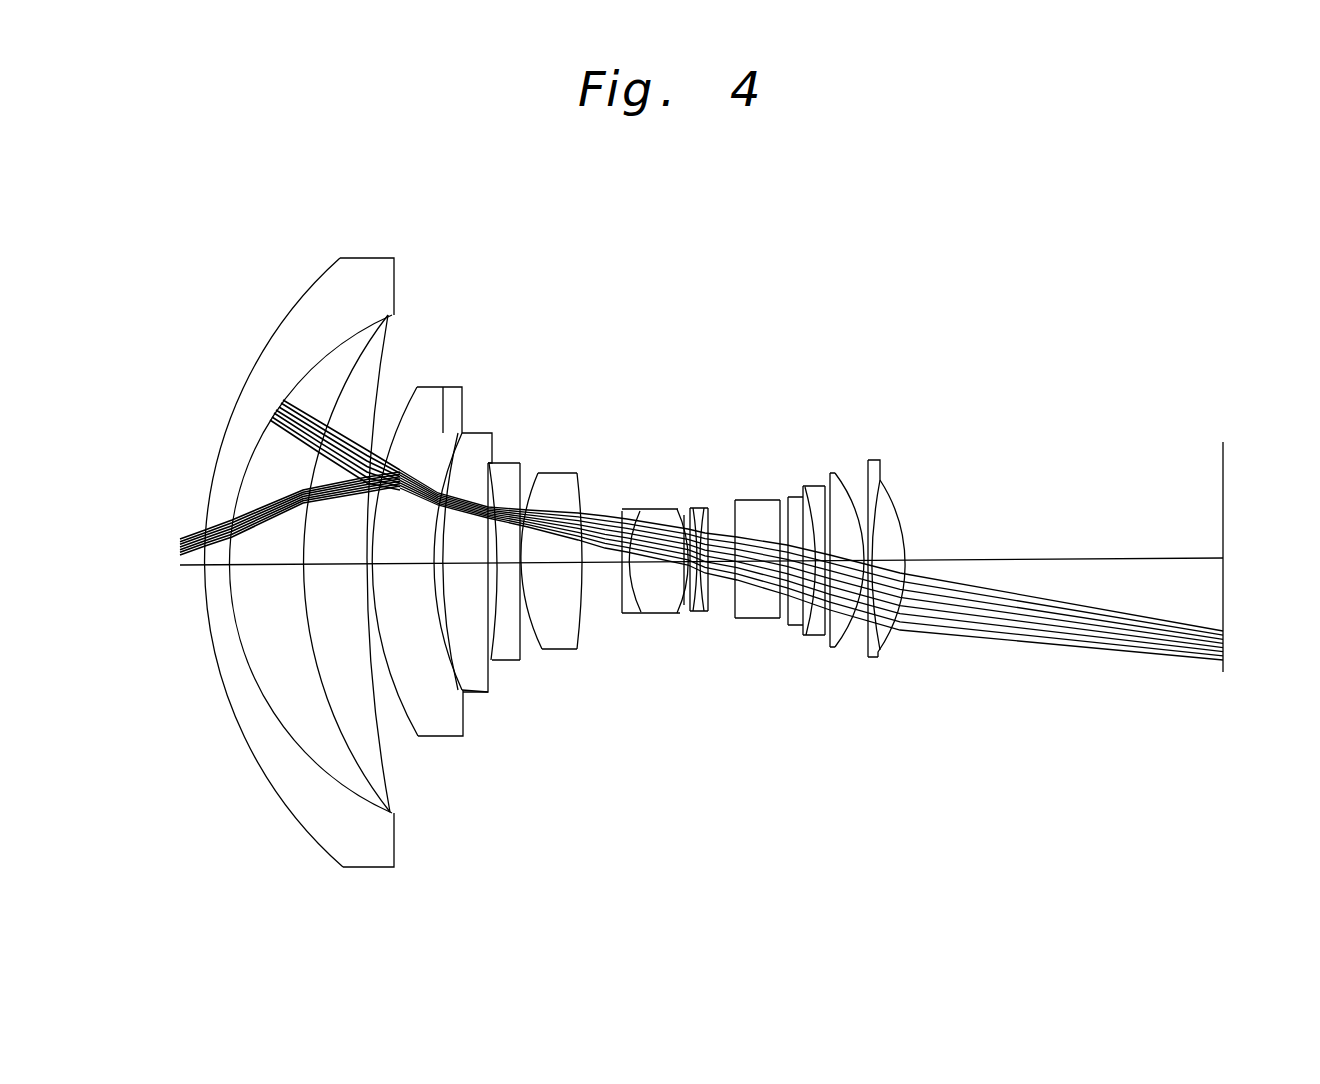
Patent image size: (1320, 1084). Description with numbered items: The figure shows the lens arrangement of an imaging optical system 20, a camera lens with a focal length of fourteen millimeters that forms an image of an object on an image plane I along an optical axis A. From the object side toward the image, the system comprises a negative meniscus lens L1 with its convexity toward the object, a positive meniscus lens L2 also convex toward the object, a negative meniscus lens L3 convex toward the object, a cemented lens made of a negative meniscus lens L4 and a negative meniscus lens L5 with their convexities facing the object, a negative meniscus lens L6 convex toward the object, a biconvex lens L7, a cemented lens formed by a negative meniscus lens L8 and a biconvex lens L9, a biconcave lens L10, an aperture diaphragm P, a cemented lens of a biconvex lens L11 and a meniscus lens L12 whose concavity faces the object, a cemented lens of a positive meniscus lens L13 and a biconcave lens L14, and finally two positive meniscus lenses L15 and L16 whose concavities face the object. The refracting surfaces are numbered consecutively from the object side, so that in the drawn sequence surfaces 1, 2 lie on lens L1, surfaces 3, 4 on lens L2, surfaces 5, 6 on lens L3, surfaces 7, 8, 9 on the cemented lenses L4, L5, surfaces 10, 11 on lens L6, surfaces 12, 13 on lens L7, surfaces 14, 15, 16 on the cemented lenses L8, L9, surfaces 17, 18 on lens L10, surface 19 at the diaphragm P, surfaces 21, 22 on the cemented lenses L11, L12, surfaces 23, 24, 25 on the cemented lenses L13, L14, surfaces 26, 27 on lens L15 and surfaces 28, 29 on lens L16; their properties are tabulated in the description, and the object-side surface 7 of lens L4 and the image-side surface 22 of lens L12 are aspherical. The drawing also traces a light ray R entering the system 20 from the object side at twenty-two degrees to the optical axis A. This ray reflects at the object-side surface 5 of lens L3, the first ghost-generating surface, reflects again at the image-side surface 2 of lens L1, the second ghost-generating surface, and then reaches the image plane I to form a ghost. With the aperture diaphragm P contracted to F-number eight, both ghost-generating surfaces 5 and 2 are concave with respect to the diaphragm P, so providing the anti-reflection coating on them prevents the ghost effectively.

The imaging optical system 20 is at (870, 294).
The negative meniscus lens L1 is at (340, 282).
The positive meniscus lens L2 is at (401, 316).
The negative meniscus lens L3 is at (432, 388).
The negative meniscus lens L4 is at (455, 388).
The negative meniscus lens L5 is at (462, 440).
The negative meniscus lens L6 is at (493, 466).
The biconvex lens L7 is at (553, 482).
The negative meniscus lens L8 is at (630, 512).
The biconvex lens L9 is at (662, 512).
The biconcave lens L10 is at (697, 510).
The biconvex lens L11 is at (763, 510).
The meniscus lens L12 is at (781, 510).
The positive meniscus lens L13 is at (789, 495).
The biconcave lens L14 is at (801, 487).
The positive meniscus lens L15 is at (840, 478).
The positive meniscus lens L16 is at (884, 470).
The aperture diaphragm P is at (717, 512).
The light ray R is at (190, 532).
The optical axis A is at (192, 575).
The image plane I is at (1227, 442).
The lens surface (surface number 1) 1 is at (265, 776).
The second ghost-generating surface 2 is at (327, 773).
The lens surface (surface number 3) 3 is at (348, 790).
The lens surface (surface number 4) 4 is at (398, 788).
The first ghost-generating surface 5 is at (398, 712).
The lens surface (surface number 6) 6 is at (432, 737).
The aspherical lens surface (surface number 7) 7 is at (454, 737).
The lens surface (surface number 8) 8 is at (478, 700).
The lens surface (surface number 9) 9 is at (480, 673).
The lens surface (surface number 10) 10 is at (496, 640).
The lens surface (surface number 11) 11 is at (519, 645).
The lens surface (surface number 12) 12 is at (543, 650).
The lens surface (surface number 13) 13 is at (582, 652).
The lens surface (surface number 14) 14 is at (621, 606).
The lens surface (surface number 15) 15 is at (633, 612).
The lens surface (surface number 16) 16 is at (679, 612).
The lens surface (surface number 17) 17 is at (690, 610).
The lens surface (surface number 18) 18 is at (704, 610).
The surface (surface number 19) 19 is at (718, 610).
The lens surface (surface number 21) 21 is at (786, 620).
The aspherical lens surface (surface number 22) 22 is at (790, 622).
The lens surface (surface number 23) 23 is at (810, 630).
The lens surface (surface number 24) 24 is at (823, 633).
The lens surface (surface number 25) 25 is at (843, 643).
The lens surface (surface number 26) 26 is at (866, 640).
The lens surface (surface number 27) 27 is at (880, 647).
The lens surface (surface number 28) 28 is at (890, 633).
The lens surface (surface number 29) 29 is at (900, 640).